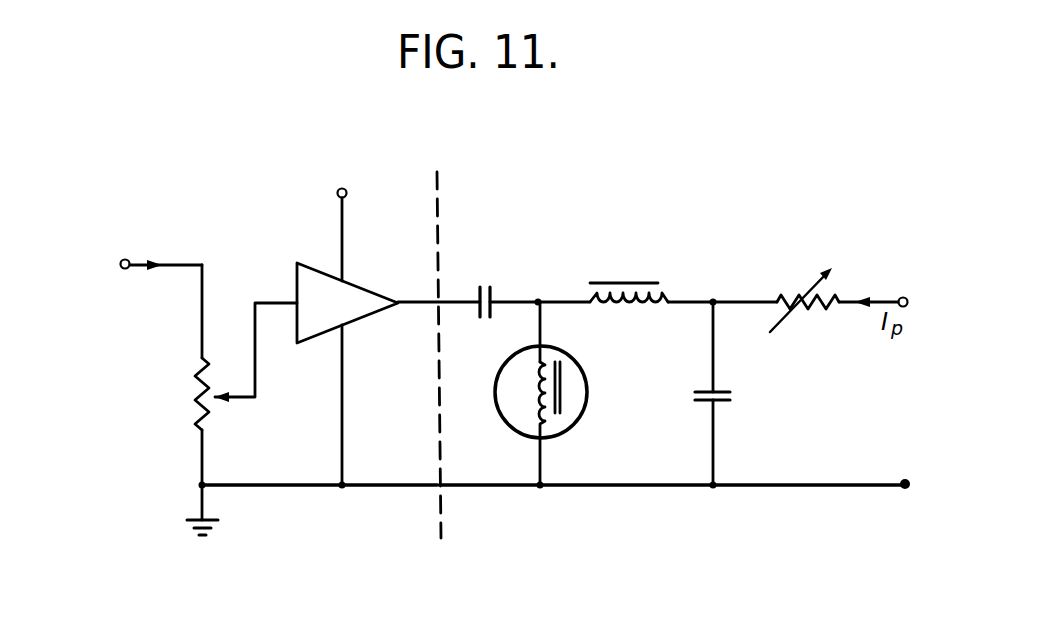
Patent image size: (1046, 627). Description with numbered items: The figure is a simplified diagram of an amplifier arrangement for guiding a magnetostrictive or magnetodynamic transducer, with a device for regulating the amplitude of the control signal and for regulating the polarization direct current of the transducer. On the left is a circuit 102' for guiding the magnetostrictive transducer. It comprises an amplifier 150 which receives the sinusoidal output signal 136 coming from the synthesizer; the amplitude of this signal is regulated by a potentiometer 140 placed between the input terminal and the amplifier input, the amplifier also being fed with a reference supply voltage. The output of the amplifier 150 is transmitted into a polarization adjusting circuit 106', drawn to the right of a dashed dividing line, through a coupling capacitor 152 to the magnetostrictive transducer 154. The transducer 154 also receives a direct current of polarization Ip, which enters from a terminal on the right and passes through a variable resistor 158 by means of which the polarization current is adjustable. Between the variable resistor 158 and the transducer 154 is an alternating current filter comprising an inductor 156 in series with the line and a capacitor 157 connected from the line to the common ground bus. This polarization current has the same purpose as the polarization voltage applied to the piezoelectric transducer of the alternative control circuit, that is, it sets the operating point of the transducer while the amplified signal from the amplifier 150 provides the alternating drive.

The circuit for guiding a magnetostrictive transducer 102' is at (301, 314).
The polarization adjusting circuit 106' is at (673, 313).
The output signal 136 is at (121, 260).
The potentiometer 140 is at (219, 405).
The amplifier 150 is at (380, 274).
The coupling capacitor 152 is at (492, 290).
The magnetostrictive transducer 154 is at (573, 373).
The inductor 156 is at (626, 281).
The capacitor 157 is at (720, 390).
The variable resistor 158 is at (795, 293).